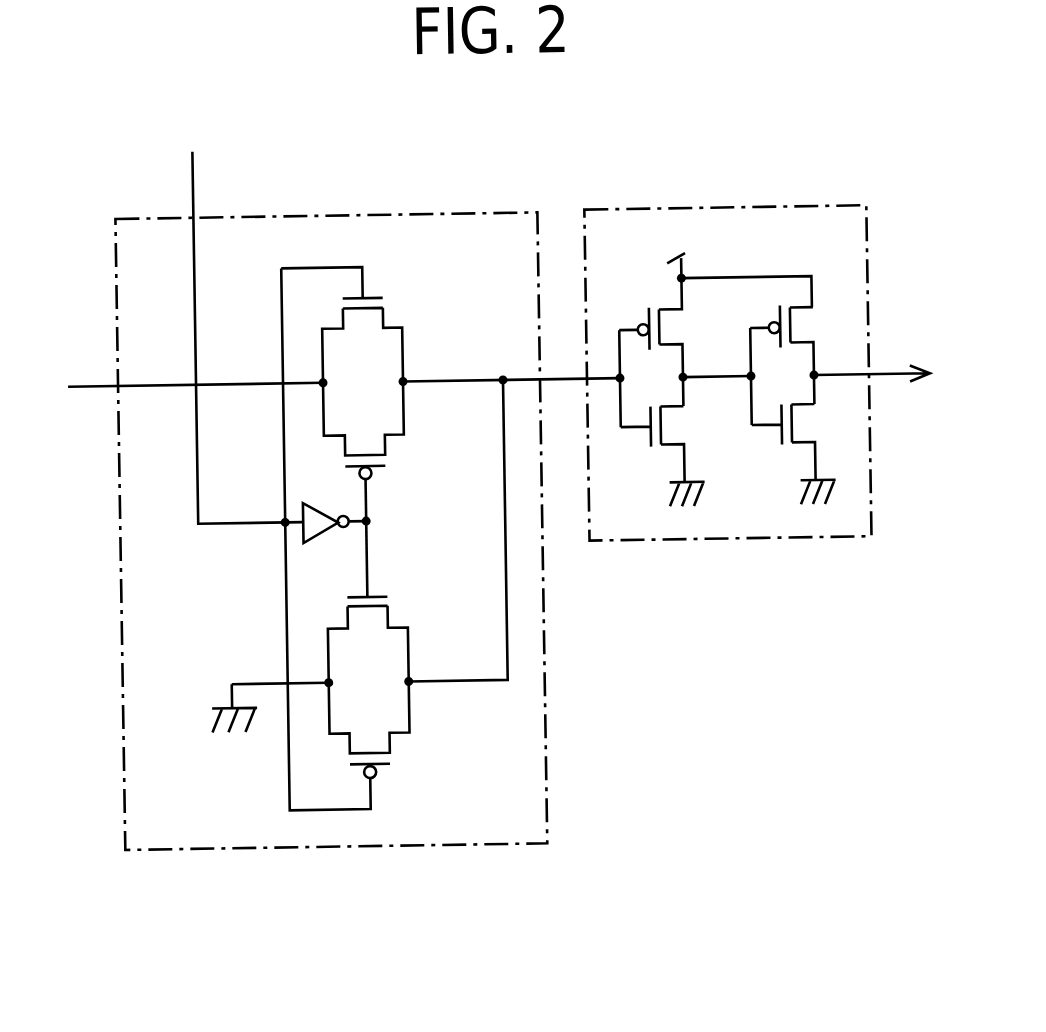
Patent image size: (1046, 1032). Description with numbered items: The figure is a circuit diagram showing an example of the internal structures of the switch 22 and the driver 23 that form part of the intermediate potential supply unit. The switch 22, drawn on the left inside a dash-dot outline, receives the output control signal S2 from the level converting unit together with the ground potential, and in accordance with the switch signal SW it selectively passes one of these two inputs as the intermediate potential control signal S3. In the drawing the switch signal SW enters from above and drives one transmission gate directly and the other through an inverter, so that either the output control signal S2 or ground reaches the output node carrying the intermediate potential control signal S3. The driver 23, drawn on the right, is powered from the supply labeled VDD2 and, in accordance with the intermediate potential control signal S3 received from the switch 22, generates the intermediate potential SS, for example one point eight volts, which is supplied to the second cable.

The switch 22 is at (218, 845).
The driver 23 is at (676, 545).
The output control signal S2 is at (194, 365).
The intermediate potential control signal S3 is at (511, 359).
The intermediate potential SS is at (871, 357).
The switch signal SW is at (234, 320).
The power supply voltage VDD2 is at (681, 246).